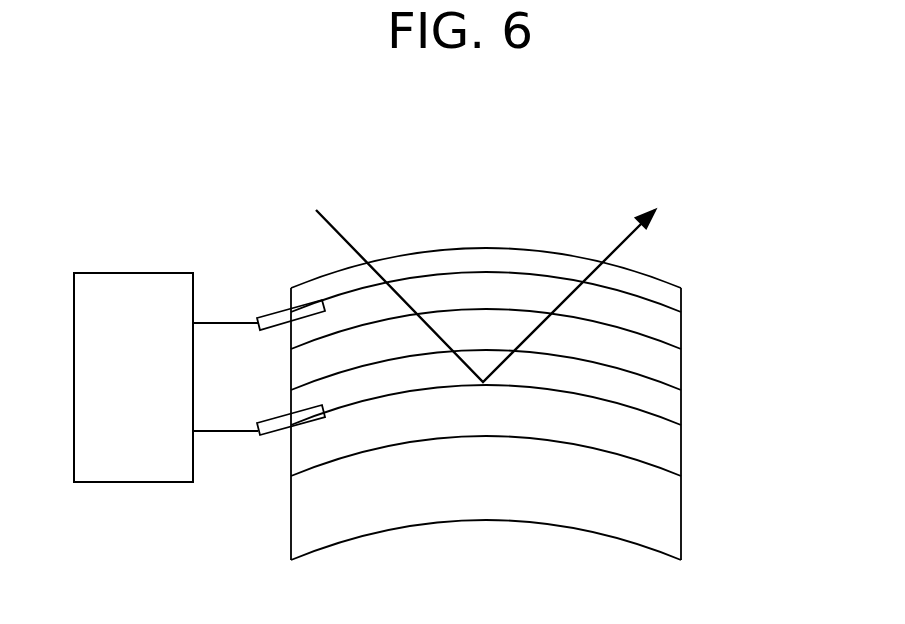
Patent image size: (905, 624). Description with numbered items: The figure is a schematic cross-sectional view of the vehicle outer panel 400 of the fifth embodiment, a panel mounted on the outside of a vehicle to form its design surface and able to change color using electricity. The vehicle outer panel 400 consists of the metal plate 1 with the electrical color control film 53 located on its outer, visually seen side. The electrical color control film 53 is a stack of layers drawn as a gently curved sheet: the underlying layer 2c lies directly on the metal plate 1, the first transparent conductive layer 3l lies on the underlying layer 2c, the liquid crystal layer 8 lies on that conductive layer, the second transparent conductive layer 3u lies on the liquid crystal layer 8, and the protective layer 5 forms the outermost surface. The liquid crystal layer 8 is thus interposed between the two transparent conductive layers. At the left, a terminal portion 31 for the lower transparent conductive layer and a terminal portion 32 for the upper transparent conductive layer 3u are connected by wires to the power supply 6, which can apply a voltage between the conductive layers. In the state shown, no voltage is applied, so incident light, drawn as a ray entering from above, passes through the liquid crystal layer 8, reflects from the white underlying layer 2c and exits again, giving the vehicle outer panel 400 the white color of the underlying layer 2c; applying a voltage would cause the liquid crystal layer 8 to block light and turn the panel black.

The vehicle outer panel 400 is at (687, 167).
The electrical color control film 53 is at (561, 377).
The protective layer 5 is at (672, 300).
The transparent conductive layer 3u is at (672, 331).
The liquid crystal layer 8 is at (672, 368).
The transparent conductive layer 3l is at (672, 405).
The underlying layer 2c is at (525, 458).
The metal plate 1 is at (672, 517).
The power supply 6 is at (150, 483).
The terminal portion 32 is at (270, 312).
The terminal portion 31 is at (273, 437).